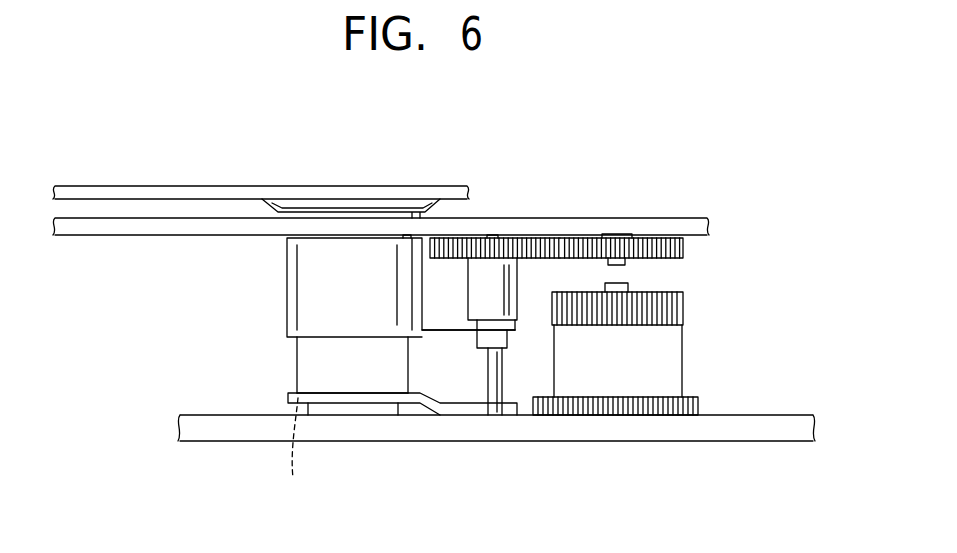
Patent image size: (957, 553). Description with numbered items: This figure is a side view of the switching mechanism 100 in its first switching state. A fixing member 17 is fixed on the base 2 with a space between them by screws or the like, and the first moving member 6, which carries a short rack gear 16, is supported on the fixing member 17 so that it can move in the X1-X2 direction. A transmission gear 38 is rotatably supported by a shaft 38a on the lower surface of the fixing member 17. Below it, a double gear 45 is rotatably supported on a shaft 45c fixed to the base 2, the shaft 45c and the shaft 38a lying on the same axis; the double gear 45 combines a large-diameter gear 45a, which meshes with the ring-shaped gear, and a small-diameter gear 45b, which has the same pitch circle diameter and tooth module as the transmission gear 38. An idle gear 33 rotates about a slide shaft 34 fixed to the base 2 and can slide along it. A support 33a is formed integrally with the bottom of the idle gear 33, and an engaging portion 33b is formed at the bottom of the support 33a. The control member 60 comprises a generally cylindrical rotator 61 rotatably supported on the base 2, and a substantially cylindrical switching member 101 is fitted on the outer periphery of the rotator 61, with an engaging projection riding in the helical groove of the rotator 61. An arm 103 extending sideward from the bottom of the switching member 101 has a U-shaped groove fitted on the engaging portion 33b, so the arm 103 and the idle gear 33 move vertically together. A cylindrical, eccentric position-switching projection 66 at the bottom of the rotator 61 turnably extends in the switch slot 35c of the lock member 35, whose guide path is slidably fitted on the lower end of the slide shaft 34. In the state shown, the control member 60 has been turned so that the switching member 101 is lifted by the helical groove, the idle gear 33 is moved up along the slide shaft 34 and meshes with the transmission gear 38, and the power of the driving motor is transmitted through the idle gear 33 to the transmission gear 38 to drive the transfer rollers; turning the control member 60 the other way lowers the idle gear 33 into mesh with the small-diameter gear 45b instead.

The base 2 is at (703, 430).
The first moving member 6 is at (433, 198).
The rack gear 16 is at (343, 210).
The fixing member 17 is at (575, 227).
The idle gear 33 is at (520, 238).
The support 33a is at (518, 298).
The engaging portion 33b is at (512, 327).
The slide shaft 34 is at (493, 385).
The lock member 35 is at (348, 395).
The switch slot 35c is at (292, 456).
The transmission gear 38 is at (665, 238).
The shaft 38a is at (615, 265).
The double gear 45 is at (700, 354).
The large-diameter gear 45a is at (693, 405).
The small-diameter gear 45b is at (678, 313).
The shaft 45c is at (616, 284).
The control member 60 is at (285, 352).
The rotator 61 is at (320, 385).
The position-switching projection 66 is at (375, 410).
The switching mechanism 100 is at (285, 262).
The switching member 101 is at (320, 292).
The arm 103 is at (450, 333).